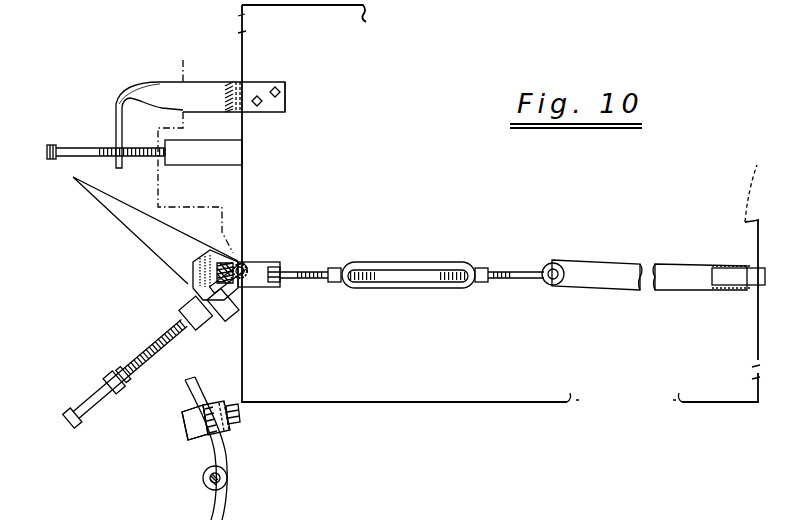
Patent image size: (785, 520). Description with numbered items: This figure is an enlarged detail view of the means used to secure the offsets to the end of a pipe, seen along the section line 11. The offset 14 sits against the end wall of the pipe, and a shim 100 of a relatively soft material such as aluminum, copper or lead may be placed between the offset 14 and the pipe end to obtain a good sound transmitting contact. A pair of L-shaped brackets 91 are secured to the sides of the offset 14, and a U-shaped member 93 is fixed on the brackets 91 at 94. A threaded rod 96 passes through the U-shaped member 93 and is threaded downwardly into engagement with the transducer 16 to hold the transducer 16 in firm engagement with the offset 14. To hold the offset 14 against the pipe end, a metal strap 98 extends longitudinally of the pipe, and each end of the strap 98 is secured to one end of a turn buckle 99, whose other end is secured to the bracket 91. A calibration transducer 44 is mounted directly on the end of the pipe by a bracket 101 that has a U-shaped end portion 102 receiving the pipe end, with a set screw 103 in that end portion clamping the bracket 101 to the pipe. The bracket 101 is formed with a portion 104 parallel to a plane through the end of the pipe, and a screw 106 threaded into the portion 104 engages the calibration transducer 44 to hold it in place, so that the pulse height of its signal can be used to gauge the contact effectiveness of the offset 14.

The section line 11- 11 is at (183, 60).
The offset 14 is at (135, 222).
The transducer 16 is at (192, 296).
The calibration transducer 44 is at (205, 163).
The L-shaped bracket 91 is at (263, 264).
The U-shaped member 93 is at (238, 292).
The fixing point 94 is at (248, 278).
The threaded rod 96 is at (92, 407).
The metal strap 98 is at (672, 268).
The turn buckle 99 is at (400, 262).
The shim 100 is at (236, 256).
The bracket 101 is at (205, 90).
The U-shaped end portion 102 is at (285, 105).
The set screw 103 is at (257, 106).
The portion 104 is at (117, 128).
The screw 106 is at (65, 150).